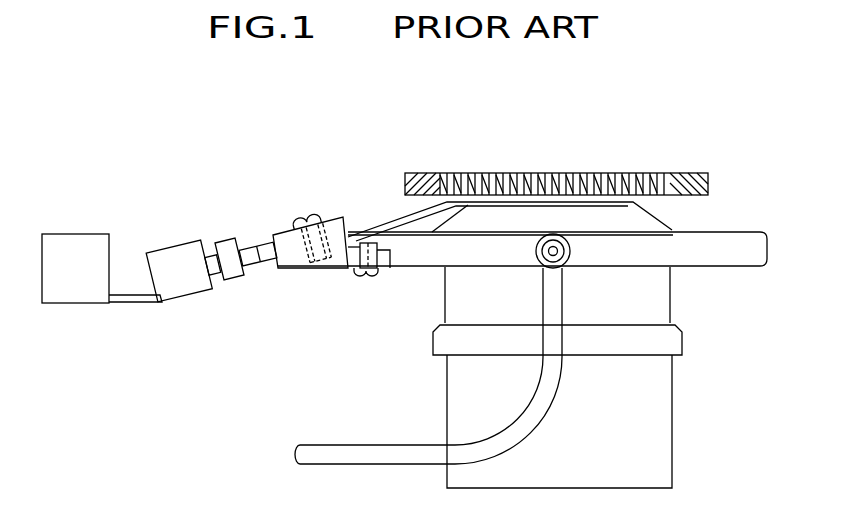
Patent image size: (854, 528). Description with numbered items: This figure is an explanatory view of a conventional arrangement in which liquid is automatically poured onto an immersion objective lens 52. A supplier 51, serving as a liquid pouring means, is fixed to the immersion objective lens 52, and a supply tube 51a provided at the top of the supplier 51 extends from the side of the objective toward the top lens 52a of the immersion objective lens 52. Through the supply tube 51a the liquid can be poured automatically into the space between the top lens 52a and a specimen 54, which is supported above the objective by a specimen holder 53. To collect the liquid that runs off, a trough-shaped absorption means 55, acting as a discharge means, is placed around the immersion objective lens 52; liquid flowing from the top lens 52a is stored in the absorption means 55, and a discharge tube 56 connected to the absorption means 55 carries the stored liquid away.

The supplier 51 is at (250, 230).
The supply tube 51a is at (384, 220).
The immersion objective lens 52 is at (706, 385).
The top lens 52a is at (667, 218).
The specimen holder 53 is at (596, 140).
The specimen 54 is at (663, 172).
The absorption means 55 is at (750, 253).
The discharge tube 56 is at (345, 453).